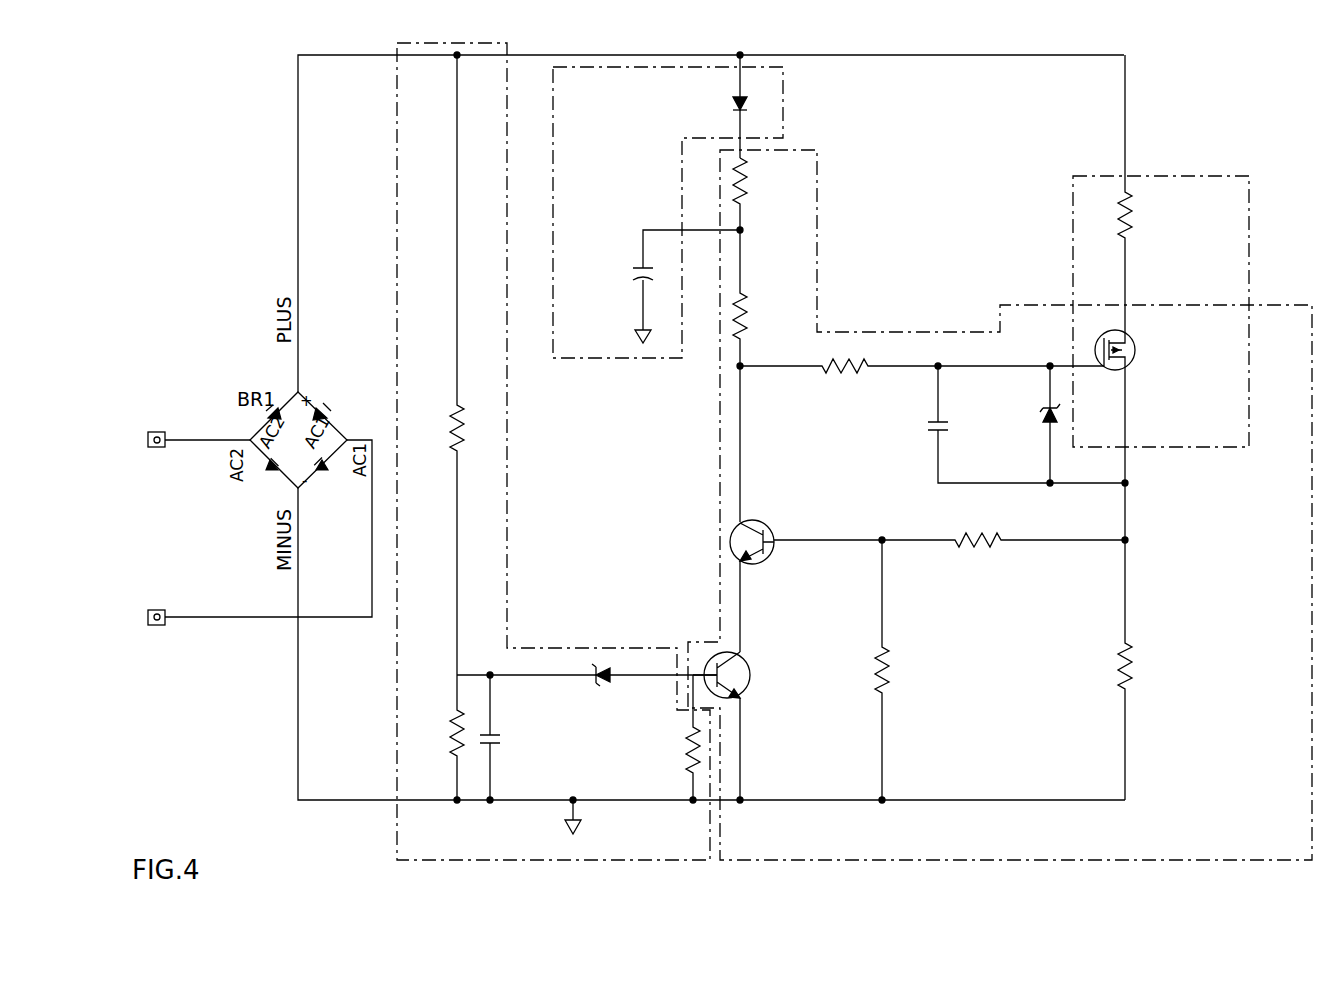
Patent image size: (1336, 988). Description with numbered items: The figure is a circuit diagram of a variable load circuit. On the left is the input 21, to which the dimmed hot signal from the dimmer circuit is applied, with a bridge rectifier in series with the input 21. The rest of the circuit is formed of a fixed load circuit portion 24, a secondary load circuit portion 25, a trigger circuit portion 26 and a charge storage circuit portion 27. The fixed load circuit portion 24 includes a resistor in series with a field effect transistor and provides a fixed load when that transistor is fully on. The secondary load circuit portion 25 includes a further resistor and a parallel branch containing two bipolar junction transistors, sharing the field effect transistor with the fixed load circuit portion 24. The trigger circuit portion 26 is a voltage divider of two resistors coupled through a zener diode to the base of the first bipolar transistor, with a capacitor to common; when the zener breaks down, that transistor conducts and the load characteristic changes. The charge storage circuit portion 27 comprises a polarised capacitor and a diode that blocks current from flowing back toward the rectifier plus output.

The input 21 is at (178, 406).
The fixed load circuit portion 24 is at (1207, 290).
The secondary load circuit portion 25 is at (860, 493).
The trigger circuit portion 26 is at (624, 790).
The charge storage circuit portion 27 is at (672, 137).